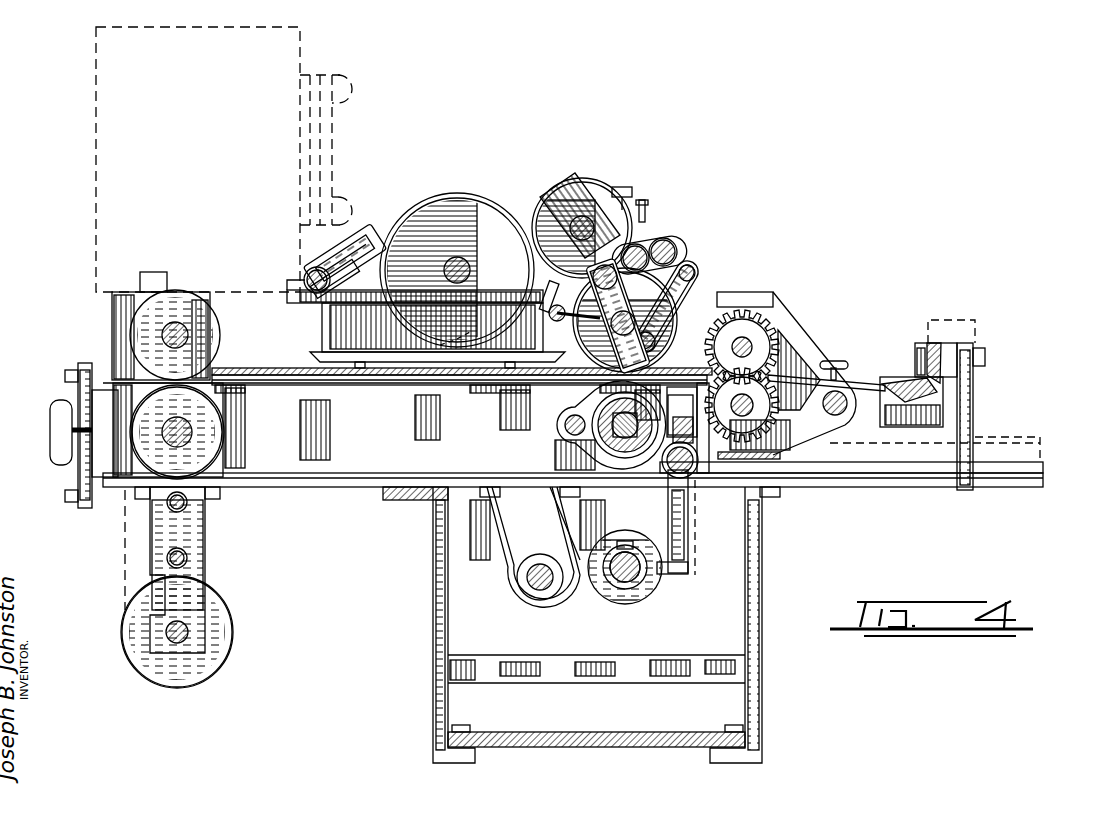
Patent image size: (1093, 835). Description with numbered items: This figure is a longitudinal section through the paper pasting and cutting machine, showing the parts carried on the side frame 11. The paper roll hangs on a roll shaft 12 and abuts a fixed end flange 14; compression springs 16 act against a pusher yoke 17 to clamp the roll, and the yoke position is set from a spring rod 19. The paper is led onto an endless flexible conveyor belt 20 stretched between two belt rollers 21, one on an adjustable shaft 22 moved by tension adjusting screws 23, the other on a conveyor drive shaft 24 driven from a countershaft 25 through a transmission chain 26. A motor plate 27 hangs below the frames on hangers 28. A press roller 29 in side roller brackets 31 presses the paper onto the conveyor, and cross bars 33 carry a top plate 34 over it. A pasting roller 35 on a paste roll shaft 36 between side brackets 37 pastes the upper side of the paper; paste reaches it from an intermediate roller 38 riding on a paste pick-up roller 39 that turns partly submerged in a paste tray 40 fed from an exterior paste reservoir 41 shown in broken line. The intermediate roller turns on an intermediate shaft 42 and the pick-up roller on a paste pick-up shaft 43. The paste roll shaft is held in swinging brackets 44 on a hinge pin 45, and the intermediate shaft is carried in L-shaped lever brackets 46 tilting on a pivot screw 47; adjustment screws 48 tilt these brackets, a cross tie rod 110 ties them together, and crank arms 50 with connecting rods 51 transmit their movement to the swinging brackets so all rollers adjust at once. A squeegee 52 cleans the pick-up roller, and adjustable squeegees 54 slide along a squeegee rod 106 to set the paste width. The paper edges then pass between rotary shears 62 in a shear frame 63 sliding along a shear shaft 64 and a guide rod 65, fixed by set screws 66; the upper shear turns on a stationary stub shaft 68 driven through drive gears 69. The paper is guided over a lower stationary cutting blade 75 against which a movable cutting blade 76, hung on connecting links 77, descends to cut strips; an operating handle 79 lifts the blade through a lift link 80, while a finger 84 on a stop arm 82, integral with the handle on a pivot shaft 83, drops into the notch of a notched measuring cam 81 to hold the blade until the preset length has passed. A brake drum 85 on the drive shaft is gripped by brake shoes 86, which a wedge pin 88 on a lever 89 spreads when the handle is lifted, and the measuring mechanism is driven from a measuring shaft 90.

The side frame 11 is at (395, 455).
The roll shaft 12 is at (190, 625).
The fixed end flange 14 is at (208, 590).
The compression springs 16 is at (168, 506).
The pusher yoke 17 is at (205, 535).
The spring rod 19 is at (200, 514).
The endless flexible conveyor belt 20 is at (322, 473).
The belt rollers 21 is at (210, 440).
The adjustable shaft 22 is at (190, 428).
The tension adjusting screws 23 is at (50, 436).
The conveyor drive shaft 24 is at (575, 420).
The countershaft 25 is at (530, 585).
The transmission chain 26 is at (505, 565).
The motor plate 27 is at (580, 732).
The hangers 28 is at (433, 640).
The press roller 29 is at (172, 305).
The side roller brackets 31 is at (125, 330).
The cross bars 33 is at (348, 376).
The top plate 34 is at (275, 368).
The pasting roller 35 is at (680, 330).
The paste roll shaft 36 is at (618, 350).
The side brackets 37 is at (625, 188).
The intermediate roller 38 is at (540, 215).
The paste pick-up roller 39 is at (445, 194).
The paste tray 40 is at (330, 330).
The exterior paste reservoir 41 is at (96, 230).
The intermediate shaft 42 is at (585, 215).
The paste pick-up shaft 43 is at (455, 258).
The swinging brackets 44 is at (616, 326).
The hinge pin 45 is at (640, 246).
The L-shaped lever bracket 46 is at (563, 184).
The pivot screw 47 is at (672, 238).
The adjustment screws 48 is at (647, 205).
The crank arms 50 is at (690, 262).
The connecting rods 51 is at (680, 303).
The squeegee 52 is at (372, 235).
The adjustable squeegees 54 is at (548, 258).
The rotary shears 62 is at (778, 345).
The shear frame 63 is at (790, 377).
The shear shaft 64 is at (752, 407).
The guide rod 65 is at (838, 412).
The set screws 66 is at (848, 365).
The stationary stub shaft 68 is at (776, 335).
The drive gears 69 is at (745, 343).
The lower stationary cutting blade 75 is at (900, 400).
The movable cutting blade 76 is at (918, 355).
The connecting links 77 is at (950, 345).
The operating handle 79 is at (1043, 462).
The lift link 80 is at (974, 420).
The notched measuring cam 81 is at (645, 596).
The stop arm 82 is at (688, 535).
The pivot shaft 83 is at (690, 490).
The finger 84 is at (672, 574).
The brake drum 85 is at (683, 386).
The brake shoes 86 is at (600, 392).
The wedge pin 88 is at (695, 470).
The lever 89 is at (686, 399).
The measuring shaft 90 is at (618, 580).
The squeegee rod 106 is at (510, 305).
The cross tie rod 110 is at (668, 248).